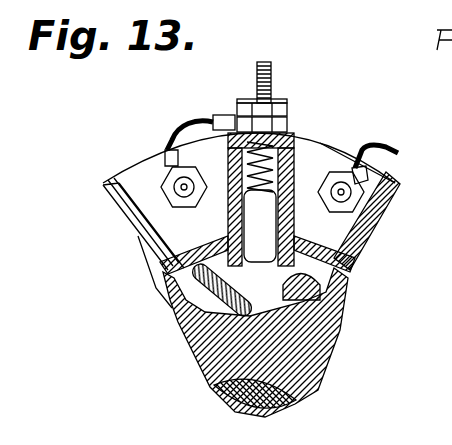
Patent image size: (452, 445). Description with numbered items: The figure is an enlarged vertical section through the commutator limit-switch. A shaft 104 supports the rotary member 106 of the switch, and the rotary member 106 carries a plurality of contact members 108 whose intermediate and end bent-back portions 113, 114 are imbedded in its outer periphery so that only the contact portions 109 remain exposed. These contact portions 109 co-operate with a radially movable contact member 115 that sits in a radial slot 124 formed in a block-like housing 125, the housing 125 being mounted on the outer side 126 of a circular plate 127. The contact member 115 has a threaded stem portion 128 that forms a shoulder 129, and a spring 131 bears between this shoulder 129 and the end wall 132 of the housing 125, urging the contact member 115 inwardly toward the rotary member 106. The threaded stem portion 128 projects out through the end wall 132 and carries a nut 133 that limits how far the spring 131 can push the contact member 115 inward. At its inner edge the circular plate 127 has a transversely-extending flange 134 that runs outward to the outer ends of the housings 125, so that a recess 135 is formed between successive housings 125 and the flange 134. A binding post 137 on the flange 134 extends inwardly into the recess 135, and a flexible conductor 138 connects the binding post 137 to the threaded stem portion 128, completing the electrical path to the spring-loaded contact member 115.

The shaft 104 is at (290, 401).
The rotary member 106 is at (318, 330).
The contact members 108 is at (298, 246).
The contact portions 109 is at (214, 250).
The intermediate bent-back portions 113 is at (200, 311).
The end bent-back portions 114 is at (345, 294).
The contact member 115 is at (246, 202).
The radial slots 124 is at (300, 138).
The block-like housings 125 is at (294, 160).
The outer side 126 is at (393, 225).
The circular plate 127 is at (388, 182).
The threaded stem portion 128 is at (262, 128).
The shoulder 129 is at (223, 187).
The spring 131 is at (213, 118).
The end wall 132 is at (244, 108).
The nut 133 is at (274, 104).
The transversely-extending flange 134 is at (370, 172).
The recess 135 is at (164, 182).
The binding post 137 is at (137, 210).
The flexible conductor 138 is at (172, 121).